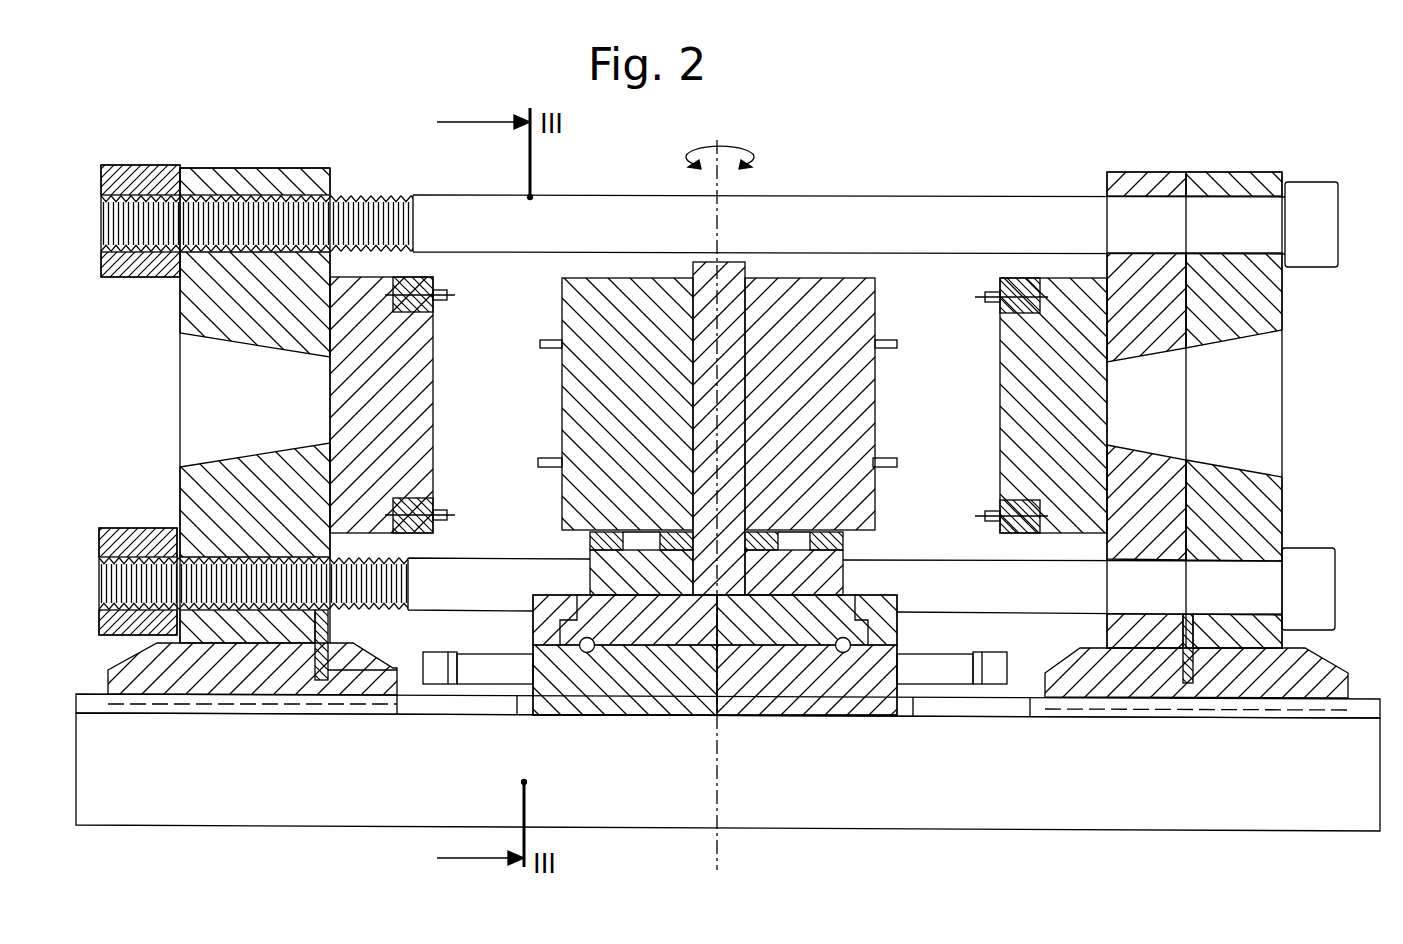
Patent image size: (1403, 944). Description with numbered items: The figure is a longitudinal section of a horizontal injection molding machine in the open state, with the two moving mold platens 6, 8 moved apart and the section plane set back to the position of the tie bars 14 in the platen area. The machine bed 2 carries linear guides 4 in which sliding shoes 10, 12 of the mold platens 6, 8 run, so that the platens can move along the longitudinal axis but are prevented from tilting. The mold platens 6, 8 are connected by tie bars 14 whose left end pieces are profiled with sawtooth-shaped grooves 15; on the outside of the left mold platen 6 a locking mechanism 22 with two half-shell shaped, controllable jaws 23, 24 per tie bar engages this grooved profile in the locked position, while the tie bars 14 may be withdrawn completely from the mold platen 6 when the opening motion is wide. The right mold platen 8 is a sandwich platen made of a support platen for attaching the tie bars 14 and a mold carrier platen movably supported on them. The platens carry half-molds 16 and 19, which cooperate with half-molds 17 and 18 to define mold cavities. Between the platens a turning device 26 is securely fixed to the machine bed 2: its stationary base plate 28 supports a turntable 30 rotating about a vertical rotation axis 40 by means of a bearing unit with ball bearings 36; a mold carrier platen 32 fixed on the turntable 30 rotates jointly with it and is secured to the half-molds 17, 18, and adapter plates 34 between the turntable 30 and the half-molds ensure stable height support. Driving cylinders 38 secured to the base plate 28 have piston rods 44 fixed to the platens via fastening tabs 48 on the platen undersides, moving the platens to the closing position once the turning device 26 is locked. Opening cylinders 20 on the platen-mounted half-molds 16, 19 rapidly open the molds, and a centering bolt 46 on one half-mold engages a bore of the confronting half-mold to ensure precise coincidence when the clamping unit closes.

The machine bed 2 is at (1198, 829).
The linear guides 4 is at (92, 694).
The mold platen 6 is at (262, 192).
The mold platen 8 is at (1147, 190).
The sliding shoe 10 is at (218, 676).
The sliding shoe 12 is at (1337, 692).
The tie bars 14 is at (866, 220).
The sawtooth-shaped grooves 15 is at (372, 194).
The half-mold 16 is at (415, 383).
The half-mold 17 is at (575, 318).
The half-mold 18 is at (860, 318).
The half-mold 19 is at (1012, 383).
The opening cylinders 20 is at (417, 282).
The locking mechanism 22 is at (147, 158).
The jaw 23 is at (128, 278).
The jaw 24 is at (107, 178).
The turning device 26 is at (683, 735).
The stationary base plate 28 is at (848, 688).
The turntable 30 is at (770, 632).
The mold carrier platen 32 is at (707, 270).
The adapter plates 34 is at (593, 572).
The ball bearings 36 is at (590, 655).
The driving cylinders 38 is at (492, 686).
The rotation axis 40 is at (737, 150).
The piston rods 44 is at (414, 686).
The centering bolt 46 is at (545, 350).
The fastening tabs 48 is at (318, 680).